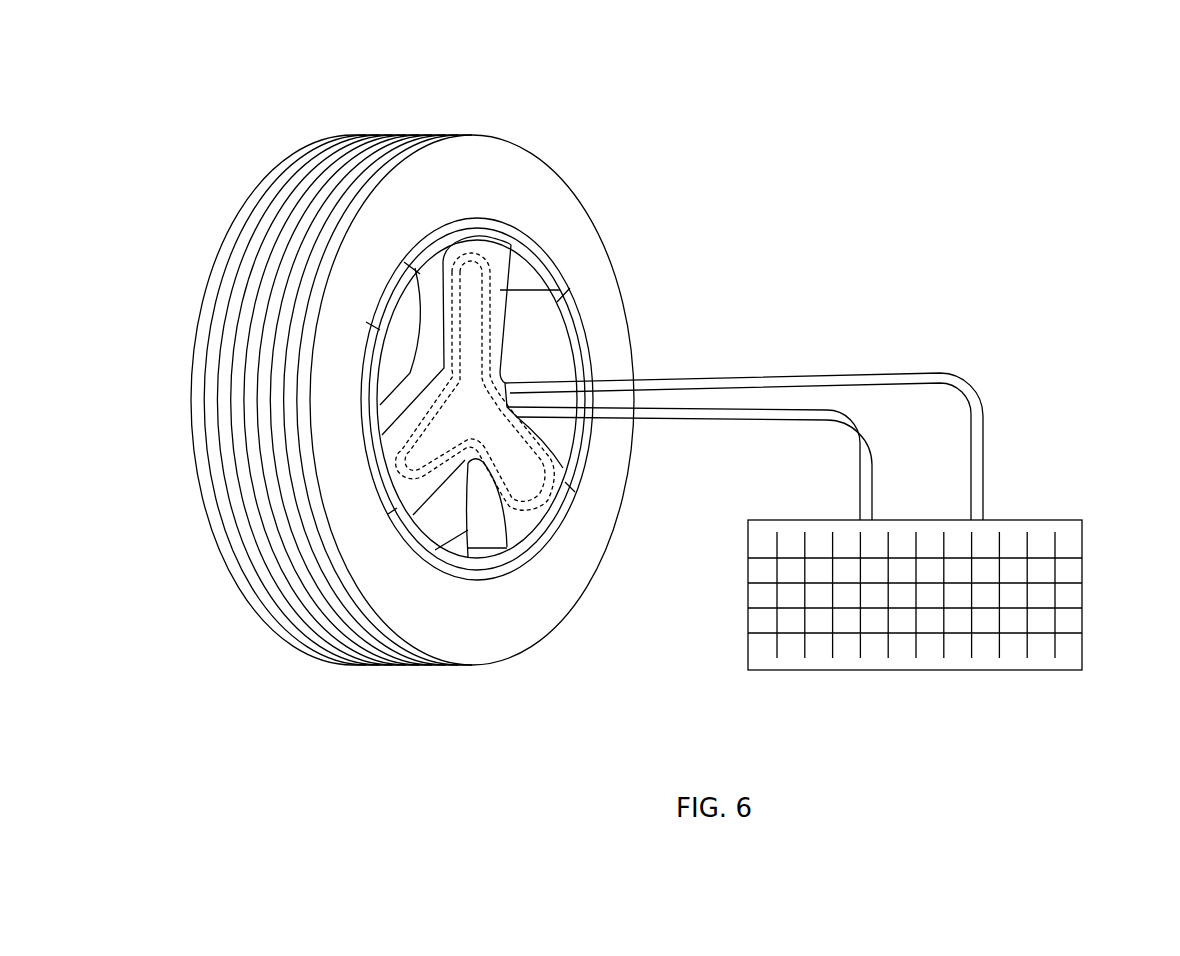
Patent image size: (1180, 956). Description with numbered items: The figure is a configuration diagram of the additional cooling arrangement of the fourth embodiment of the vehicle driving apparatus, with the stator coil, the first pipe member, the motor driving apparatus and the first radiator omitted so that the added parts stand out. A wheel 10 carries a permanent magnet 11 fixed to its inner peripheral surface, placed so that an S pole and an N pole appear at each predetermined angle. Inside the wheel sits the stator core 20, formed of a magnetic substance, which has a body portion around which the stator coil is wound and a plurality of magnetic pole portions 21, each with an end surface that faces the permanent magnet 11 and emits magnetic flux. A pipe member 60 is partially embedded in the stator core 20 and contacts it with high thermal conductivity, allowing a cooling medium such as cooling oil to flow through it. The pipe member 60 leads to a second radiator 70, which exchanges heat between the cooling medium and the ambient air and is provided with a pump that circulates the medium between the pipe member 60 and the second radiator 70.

The wheel 10 is at (367, 134).
The permanent magnet 11 is at (407, 268).
The stator core 20 is at (560, 466).
The magnetic pole portion 21 is at (500, 222).
The pipe member 60 is at (800, 407).
The second radiator 70 is at (1085, 535).